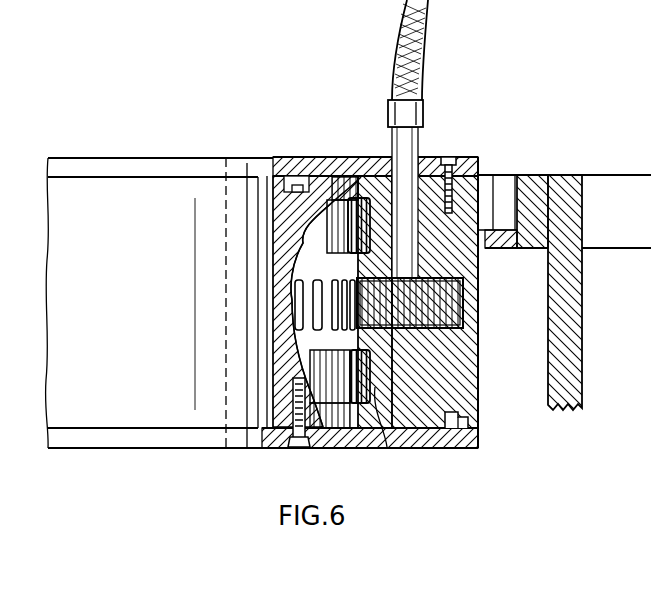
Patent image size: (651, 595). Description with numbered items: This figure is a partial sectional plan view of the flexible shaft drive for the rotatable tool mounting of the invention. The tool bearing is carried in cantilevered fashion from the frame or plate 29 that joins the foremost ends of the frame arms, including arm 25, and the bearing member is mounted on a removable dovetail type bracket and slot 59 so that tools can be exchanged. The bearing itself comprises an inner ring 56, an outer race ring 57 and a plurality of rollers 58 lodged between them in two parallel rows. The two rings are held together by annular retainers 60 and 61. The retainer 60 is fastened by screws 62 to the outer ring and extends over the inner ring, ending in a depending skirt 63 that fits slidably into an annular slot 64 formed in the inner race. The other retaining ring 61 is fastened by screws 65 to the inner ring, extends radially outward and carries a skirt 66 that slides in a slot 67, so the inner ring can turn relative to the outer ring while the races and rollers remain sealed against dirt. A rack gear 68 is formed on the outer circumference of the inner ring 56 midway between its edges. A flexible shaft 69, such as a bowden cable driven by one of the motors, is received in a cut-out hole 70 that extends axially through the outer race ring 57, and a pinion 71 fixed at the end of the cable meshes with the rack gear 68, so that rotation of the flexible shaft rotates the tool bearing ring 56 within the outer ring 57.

The arm 25 is at (638, 175).
The frame or plate 29 is at (585, 322).
The inner ring 56 is at (128, 195).
The outer race ring 57 is at (465, 275).
The rollers 58 is at (378, 157).
The dovetail type bracket and slot 59 is at (522, 166).
The annular retainer 60 is at (318, 157).
The annular retainer 61 is at (335, 448).
The screws 62 is at (452, 157).
The depending skirt 63 is at (278, 181).
The annular slot 64 is at (288, 196).
The screws 65 is at (297, 447).
The skirt 66 is at (452, 448).
The slot 67 is at (468, 416).
The rack gear 68 is at (318, 310).
The flexible shaft 69 is at (424, 70).
The cut-out hole 70 is at (465, 345).
The pinion 71 is at (465, 300).